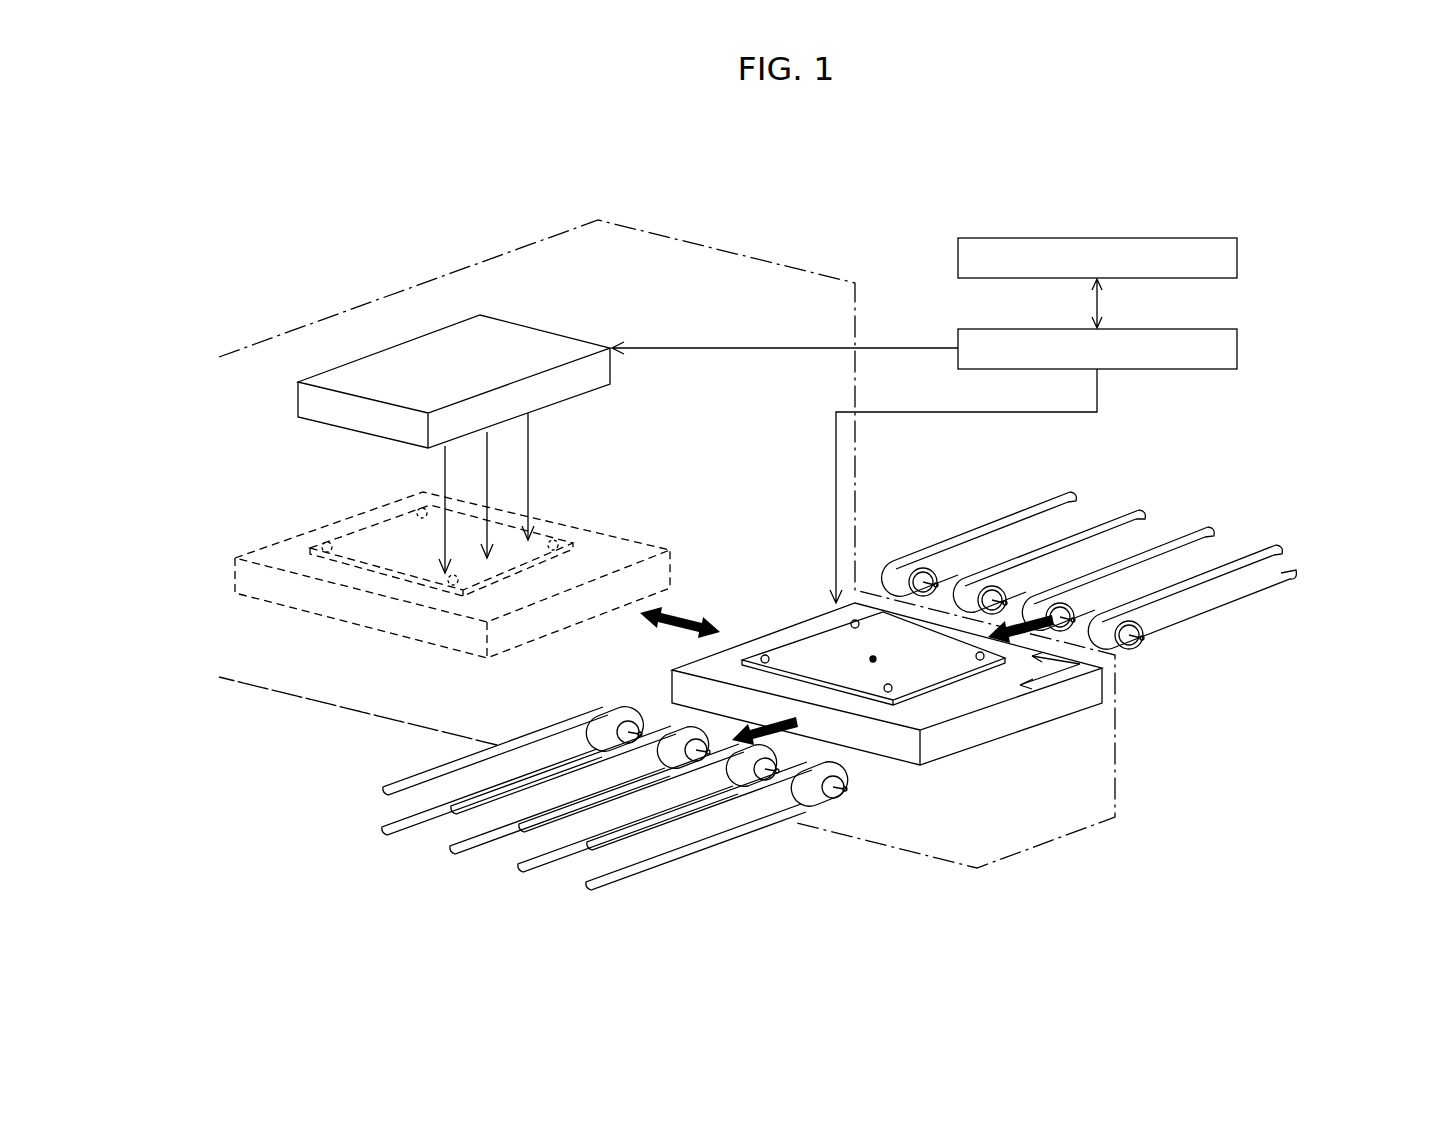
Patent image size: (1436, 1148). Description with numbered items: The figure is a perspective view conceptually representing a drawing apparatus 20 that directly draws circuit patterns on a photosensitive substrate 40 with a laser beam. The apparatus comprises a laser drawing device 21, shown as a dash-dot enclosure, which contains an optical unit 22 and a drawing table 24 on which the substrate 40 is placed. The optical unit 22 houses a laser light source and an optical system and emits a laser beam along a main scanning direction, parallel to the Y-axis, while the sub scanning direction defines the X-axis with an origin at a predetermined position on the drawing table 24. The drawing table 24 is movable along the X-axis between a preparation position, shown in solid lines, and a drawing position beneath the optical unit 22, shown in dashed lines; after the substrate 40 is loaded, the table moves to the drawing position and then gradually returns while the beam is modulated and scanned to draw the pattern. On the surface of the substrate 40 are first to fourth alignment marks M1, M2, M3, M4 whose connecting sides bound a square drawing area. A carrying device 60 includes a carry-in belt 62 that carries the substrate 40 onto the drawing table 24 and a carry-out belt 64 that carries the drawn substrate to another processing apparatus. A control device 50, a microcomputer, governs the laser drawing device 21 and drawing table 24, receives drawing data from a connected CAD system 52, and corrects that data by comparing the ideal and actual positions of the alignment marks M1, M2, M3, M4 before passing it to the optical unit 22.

The drawing apparatus 20 is at (852, 207).
The laser drawing device 21 is at (716, 248).
The optical unit 22 is at (527, 342).
The drawing table 24 is at (615, 550).
The photosensitive substrate 40 is at (547, 557).
The control device 50 is at (1237, 349).
The CAD system 52 is at (1237, 258).
The carrying device 60 is at (865, 714).
The carry-in belt 62 is at (1228, 610).
The carry-out belt 64 is at (630, 870).
The first alignment mark M1 is at (407, 512).
The second alignment mark M2 is at (310, 547).
The third alignment mark M3 is at (533, 565).
The fourth alignment mark M4 is at (447, 590).